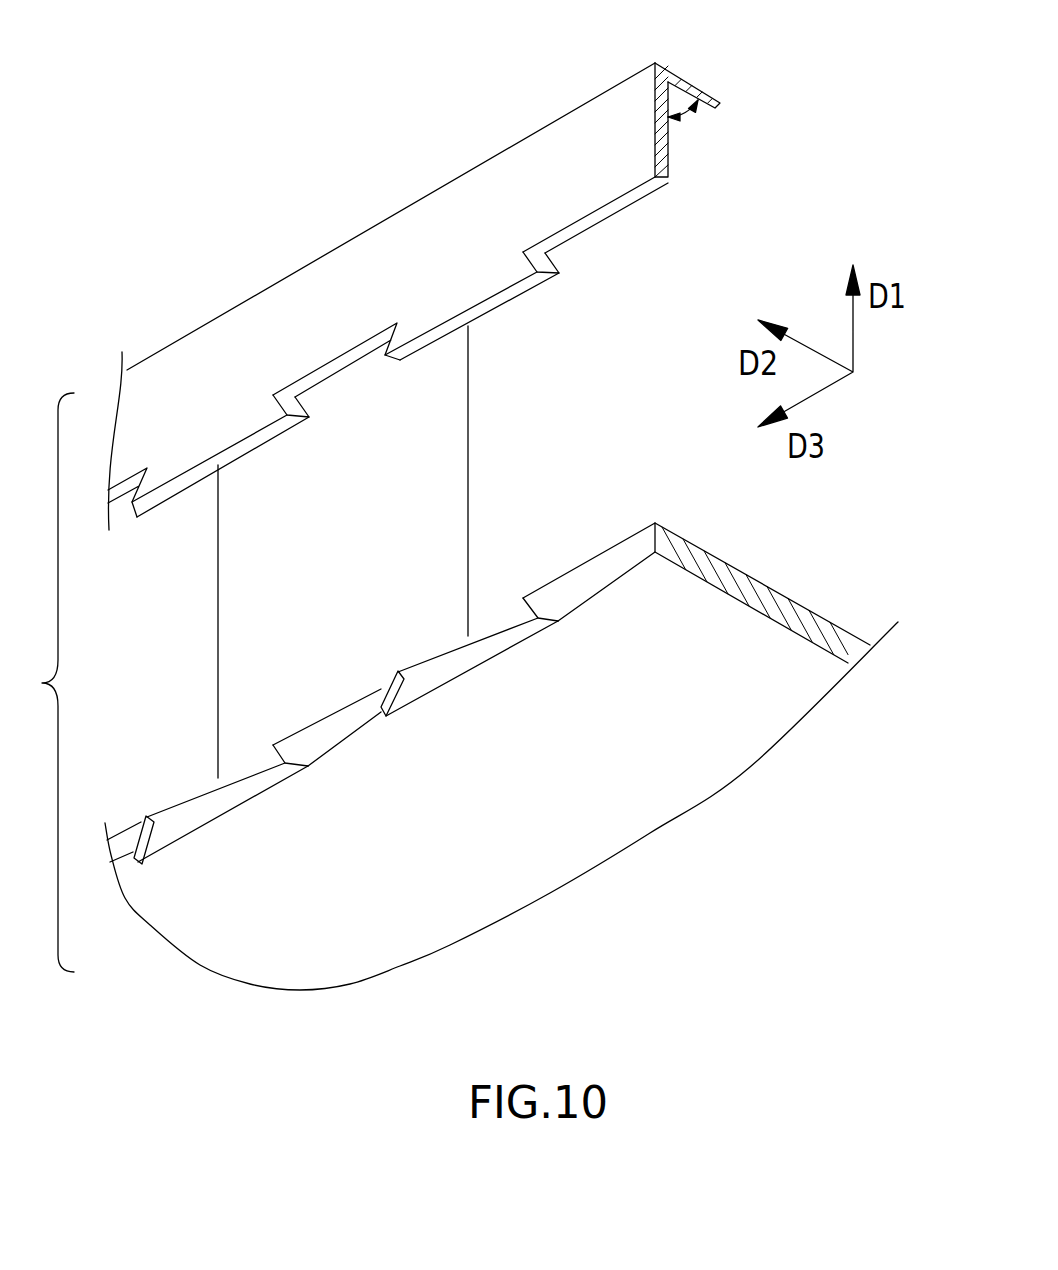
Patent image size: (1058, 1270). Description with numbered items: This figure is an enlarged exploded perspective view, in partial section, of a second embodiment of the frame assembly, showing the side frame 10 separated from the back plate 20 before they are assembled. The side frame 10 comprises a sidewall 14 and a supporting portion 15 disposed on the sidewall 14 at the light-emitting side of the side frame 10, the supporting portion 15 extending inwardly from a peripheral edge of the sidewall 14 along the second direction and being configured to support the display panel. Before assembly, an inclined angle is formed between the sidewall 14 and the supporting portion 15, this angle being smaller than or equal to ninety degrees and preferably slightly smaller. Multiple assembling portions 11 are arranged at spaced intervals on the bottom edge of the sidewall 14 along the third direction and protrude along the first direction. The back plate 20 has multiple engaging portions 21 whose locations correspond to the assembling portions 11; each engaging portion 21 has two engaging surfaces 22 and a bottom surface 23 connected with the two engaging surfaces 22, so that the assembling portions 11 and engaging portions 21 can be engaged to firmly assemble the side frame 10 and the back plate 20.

The side frame 10 is at (444, 272).
The assembling portions 11 is at (487, 283).
The sidewall 14 is at (594, 135).
The supporting portion 15 is at (693, 88).
The back plate 20 is at (501, 714).
The engaging portions 21 is at (442, 647).
The engaging surfaces 22 is at (391, 710).
The bottom surface 23 is at (480, 651).